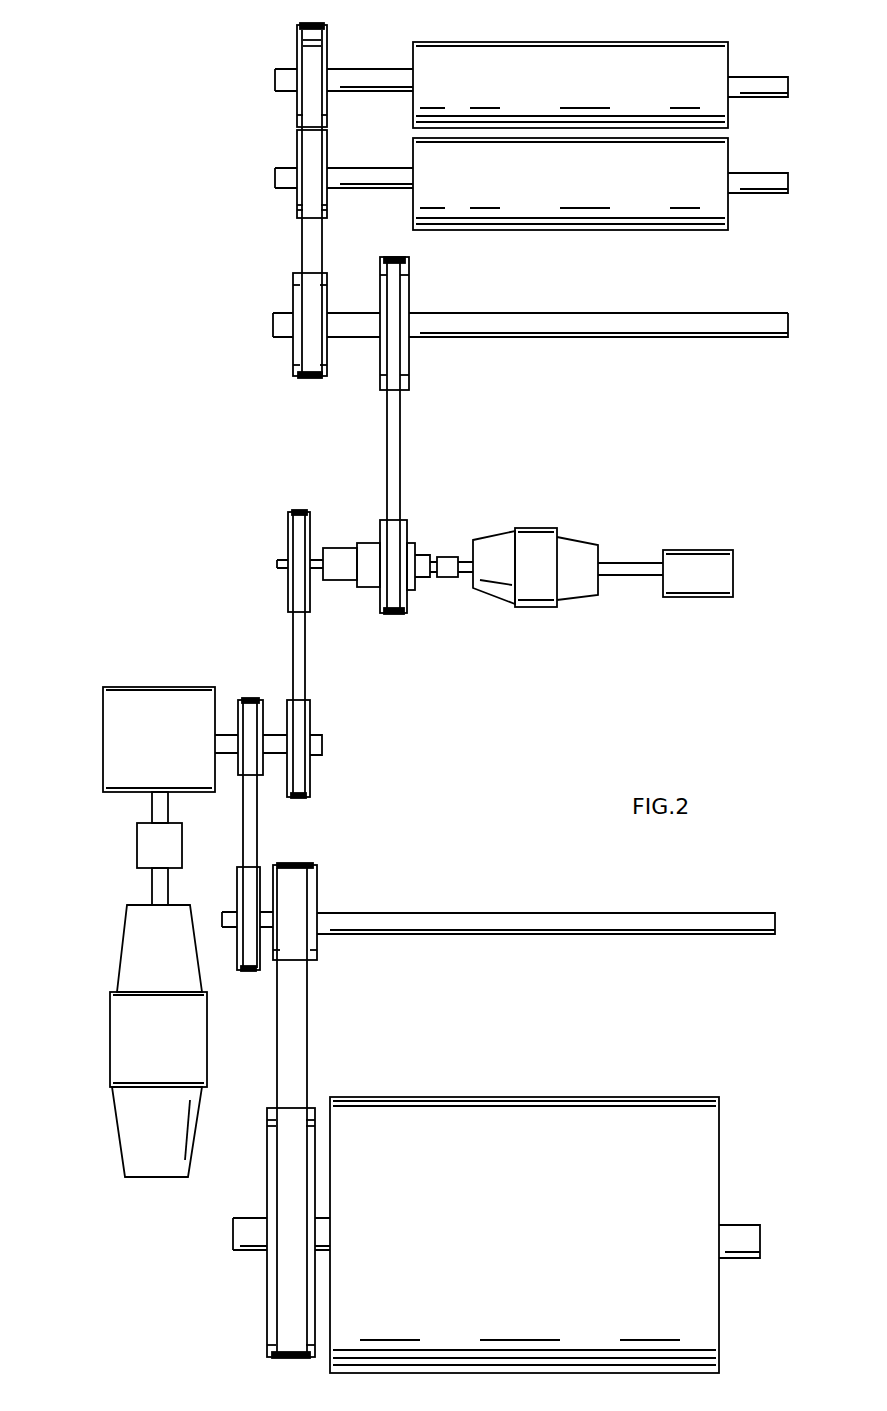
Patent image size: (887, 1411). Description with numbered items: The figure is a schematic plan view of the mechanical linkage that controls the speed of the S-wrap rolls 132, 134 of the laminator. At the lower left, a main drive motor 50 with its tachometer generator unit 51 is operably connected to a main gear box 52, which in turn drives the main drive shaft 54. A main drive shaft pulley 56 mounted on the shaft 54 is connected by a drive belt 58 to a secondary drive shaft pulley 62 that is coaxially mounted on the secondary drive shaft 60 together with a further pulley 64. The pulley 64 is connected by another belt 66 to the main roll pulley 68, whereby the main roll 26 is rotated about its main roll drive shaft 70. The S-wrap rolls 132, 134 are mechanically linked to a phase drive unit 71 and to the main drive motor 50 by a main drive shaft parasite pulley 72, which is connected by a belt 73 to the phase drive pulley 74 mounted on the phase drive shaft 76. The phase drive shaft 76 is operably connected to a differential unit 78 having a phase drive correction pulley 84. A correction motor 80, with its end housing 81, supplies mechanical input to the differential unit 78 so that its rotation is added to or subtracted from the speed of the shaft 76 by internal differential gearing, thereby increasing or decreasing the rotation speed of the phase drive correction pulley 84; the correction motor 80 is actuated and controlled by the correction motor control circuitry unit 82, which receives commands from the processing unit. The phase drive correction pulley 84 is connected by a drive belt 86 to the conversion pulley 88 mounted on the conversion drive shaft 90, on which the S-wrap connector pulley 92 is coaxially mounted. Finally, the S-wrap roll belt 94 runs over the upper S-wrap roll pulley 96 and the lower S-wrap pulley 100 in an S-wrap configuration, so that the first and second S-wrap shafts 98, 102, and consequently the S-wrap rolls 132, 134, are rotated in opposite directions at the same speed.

The main roll 26 is at (565, 1097).
The main drive motor 50 is at (110, 1050).
The tachometer generator unit 51 is at (135, 1145).
The main gear box 52 is at (150, 690).
The main drive shaft 54 is at (322, 745).
The main drive shaft pulley 56 is at (238, 700).
The drive belt 58 is at (257, 838).
The secondary drive shaft 60 is at (440, 916).
The secondary drive shaft pulley 62 is at (237, 870).
The pulley 64 is at (317, 880).
The belt 66 is at (308, 1048).
The main roll pulley 68 is at (267, 1280).
The main roll drive shaft 70 is at (233, 1232).
The phase drive unit 71 is at (299, 500).
The main drive shaft parasite pulley 72 is at (310, 712).
The belt 73 is at (305, 665).
The phase drive pulley 74 is at (288, 540).
The phase drive shaft 76 is at (323, 550).
The differential unit 78 is at (440, 557).
The correction motor 80 is at (537, 540).
The motor end housing 81 is at (570, 545).
The correction motor control circuitry unit 82 is at (733, 560).
The phase drive correction pulley 84 is at (408, 540).
The drive belt 86 is at (400, 437).
The conversion pulley 88 is at (409, 292).
The conversion drive shaft 90 is at (690, 322).
The S-wrap connector pulley 92 is at (293, 305).
The S-wrap roll belt 94 is at (302, 250).
The upper S-wrap roll pulley 96 is at (297, 44).
The first S-wrap shaft 98 is at (275, 78).
The lower S-wrap pulley 100 is at (297, 158).
The second S-wrap shaft 102 is at (275, 180).
The S-wrap roll 132 is at (728, 48).
The S-wrap roll 134 is at (722, 168).